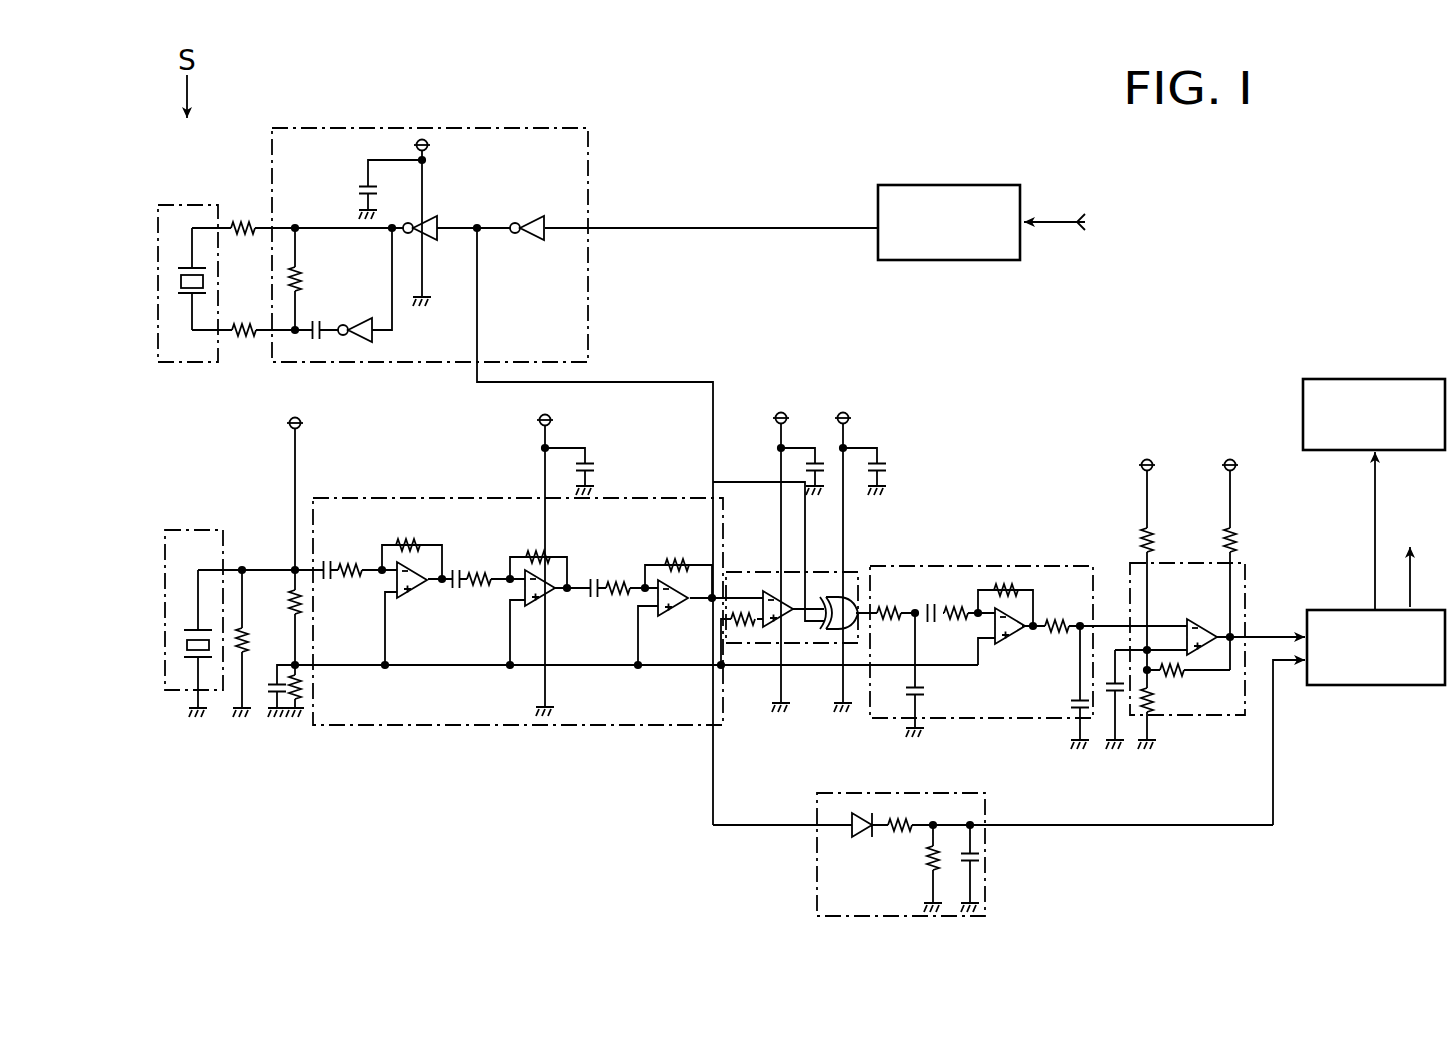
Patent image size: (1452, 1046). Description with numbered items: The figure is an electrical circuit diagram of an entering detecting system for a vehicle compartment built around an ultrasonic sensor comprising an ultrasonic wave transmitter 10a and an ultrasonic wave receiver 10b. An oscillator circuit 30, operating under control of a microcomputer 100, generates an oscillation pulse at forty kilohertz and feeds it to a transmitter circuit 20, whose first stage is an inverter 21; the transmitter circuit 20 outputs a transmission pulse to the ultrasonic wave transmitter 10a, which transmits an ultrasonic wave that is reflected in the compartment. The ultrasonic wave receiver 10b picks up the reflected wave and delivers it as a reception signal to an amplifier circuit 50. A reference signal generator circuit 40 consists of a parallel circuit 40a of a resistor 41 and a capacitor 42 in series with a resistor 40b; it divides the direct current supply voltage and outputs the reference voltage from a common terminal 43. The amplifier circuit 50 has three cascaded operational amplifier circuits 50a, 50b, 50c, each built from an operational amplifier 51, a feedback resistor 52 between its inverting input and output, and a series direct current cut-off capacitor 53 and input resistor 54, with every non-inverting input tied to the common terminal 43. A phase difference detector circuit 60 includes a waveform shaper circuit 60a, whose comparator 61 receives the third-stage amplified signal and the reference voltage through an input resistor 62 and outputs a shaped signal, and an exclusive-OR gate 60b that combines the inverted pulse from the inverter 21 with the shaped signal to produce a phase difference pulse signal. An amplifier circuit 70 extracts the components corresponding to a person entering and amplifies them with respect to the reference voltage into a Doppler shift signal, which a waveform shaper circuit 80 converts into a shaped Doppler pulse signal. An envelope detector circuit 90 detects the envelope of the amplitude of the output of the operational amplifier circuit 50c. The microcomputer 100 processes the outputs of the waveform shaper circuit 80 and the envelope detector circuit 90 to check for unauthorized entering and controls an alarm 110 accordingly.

The ultrasonic wave transmitter 10a is at (188, 205).
The ultrasonic wave receiver 10b is at (195, 530).
The transmitter circuit 20 is at (516, 122).
The inverter 21 is at (522, 216).
The oscillator circuit 30 is at (954, 182).
The reference signal generator circuit 40 is at (285, 604).
The parallel circuit 40a is at (277, 653).
The resistor 40b is at (305, 595).
The resistor 41 is at (313, 702).
The capacitor 42 is at (275, 702).
The common terminal 43 is at (305, 676).
The amplifier circuit 50 is at (538, 601).
The operational amplifier circuit 50a is at (422, 536).
The operational amplifier circuit 50b is at (572, 617).
The operational amplifier circuit 50c is at (690, 549).
The operational amplifier 51 is at (417, 598).
The feedback resistor 52 is at (405, 540).
The direct current cut-off capacitor 53 is at (328, 560).
The input resistor 54 is at (350, 560).
The phase difference detector circuit 60 is at (783, 568).
The waveform shaper circuit 60a is at (780, 605).
The exclusive-OR gate 60b is at (851, 634).
The comparator 61 is at (790, 622).
The input resistor 62 is at (735, 631).
The amplifier circuit 70 is at (953, 563).
The waveform shaper circuit 80 is at (1200, 718).
The envelope detector circuit 90 is at (990, 868).
The microcomputer 100 is at (1370, 692).
The alarm 110 is at (1387, 378).